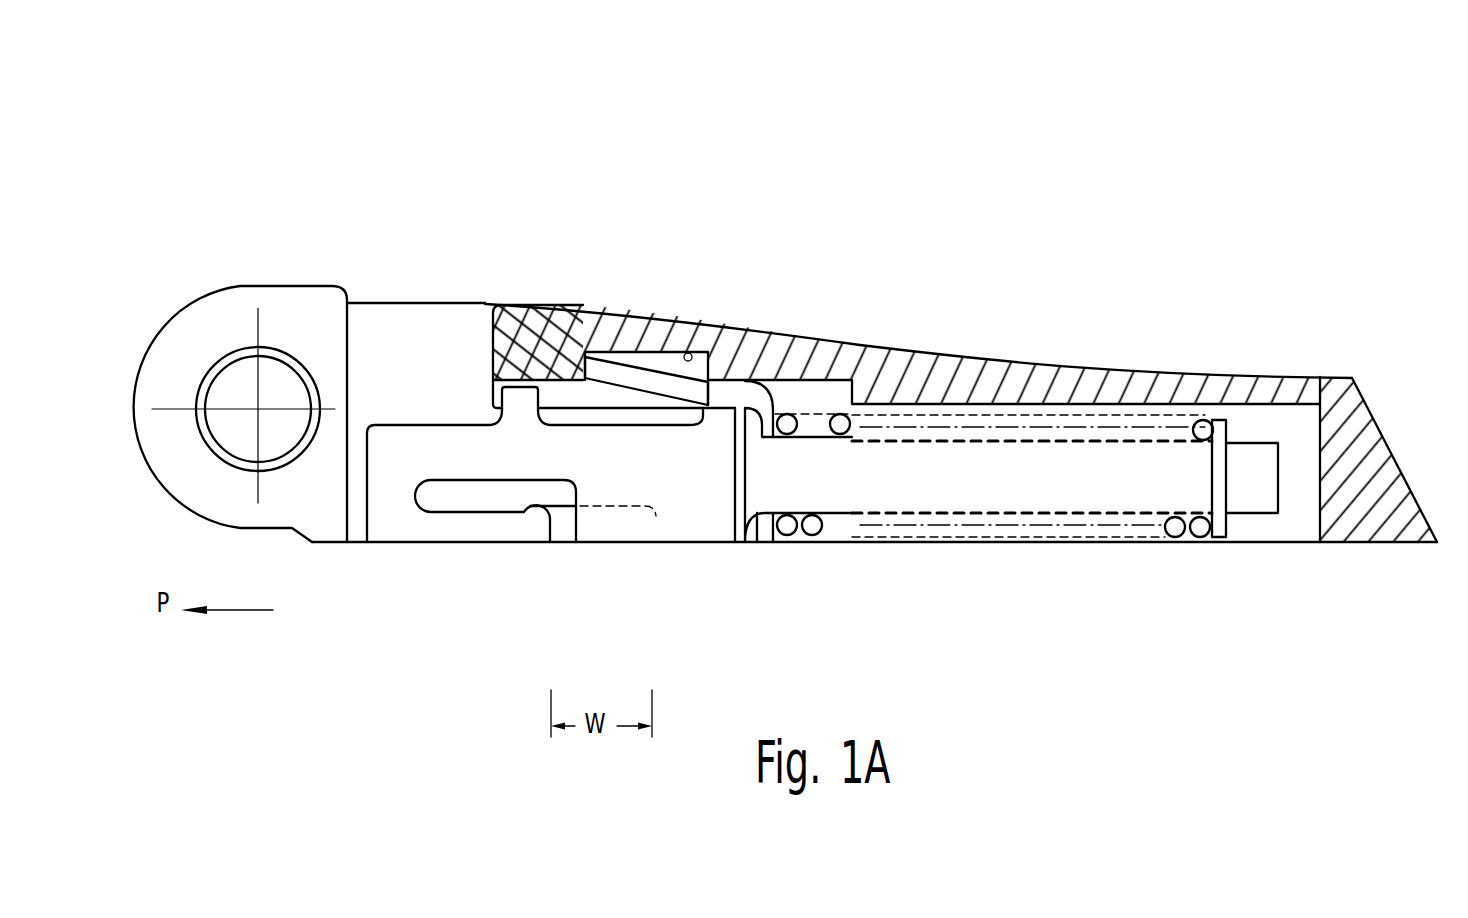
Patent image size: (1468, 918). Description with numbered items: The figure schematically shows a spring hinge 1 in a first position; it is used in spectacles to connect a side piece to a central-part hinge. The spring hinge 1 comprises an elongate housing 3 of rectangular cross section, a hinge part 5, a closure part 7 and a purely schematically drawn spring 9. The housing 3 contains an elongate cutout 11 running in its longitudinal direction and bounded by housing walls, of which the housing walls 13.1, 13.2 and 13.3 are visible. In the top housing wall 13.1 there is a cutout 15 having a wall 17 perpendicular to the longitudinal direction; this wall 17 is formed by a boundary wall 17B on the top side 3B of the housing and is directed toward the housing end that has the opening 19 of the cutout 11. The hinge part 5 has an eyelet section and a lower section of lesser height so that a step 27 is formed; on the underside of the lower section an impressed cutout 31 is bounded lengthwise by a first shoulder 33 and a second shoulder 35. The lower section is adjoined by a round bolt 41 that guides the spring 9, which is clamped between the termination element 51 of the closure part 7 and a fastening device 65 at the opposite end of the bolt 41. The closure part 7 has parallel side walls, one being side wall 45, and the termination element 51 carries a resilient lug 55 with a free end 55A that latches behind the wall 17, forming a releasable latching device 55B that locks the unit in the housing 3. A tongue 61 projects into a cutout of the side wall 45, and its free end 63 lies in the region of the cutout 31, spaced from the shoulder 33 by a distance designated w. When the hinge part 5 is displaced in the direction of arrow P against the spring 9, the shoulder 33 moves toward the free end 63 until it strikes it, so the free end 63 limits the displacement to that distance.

The spring hinge 1 is at (547, 164).
The spring-hinge housing 3 is at (963, 352).
The top side of the housing 3B is at (803, 238).
The hinge part 5 is at (394, 282).
The closure part 7 is at (402, 645).
The spring 9 is at (843, 655).
The cutout 11 is at (1328, 643).
The housing wall 13.1 is at (1180, 262).
The housing wall 13.2 is at (1432, 395).
The housing wall 13.3 is at (1132, 652).
The cutout 15 is at (698, 350).
The wall 17 is at (583, 360).
The boundary wall 17B is at (510, 307).
The opening 19 is at (492, 380).
The step 27 is at (481, 388).
The cutout 31 is at (627, 633).
The first shoulder 33 is at (688, 643).
The second shoulder 35 is at (525, 663).
The bolt 41 is at (1055, 643).
The side wall 45 is at (340, 648).
The termination element 51 is at (858, 243).
The resilient lug 55 is at (634, 378).
The free end 55A is at (592, 368).
The latching device 55B is at (750, 628).
The tongue 61 is at (493, 640).
The free end 63 is at (580, 600).
The fastening device 65 is at (1222, 647).